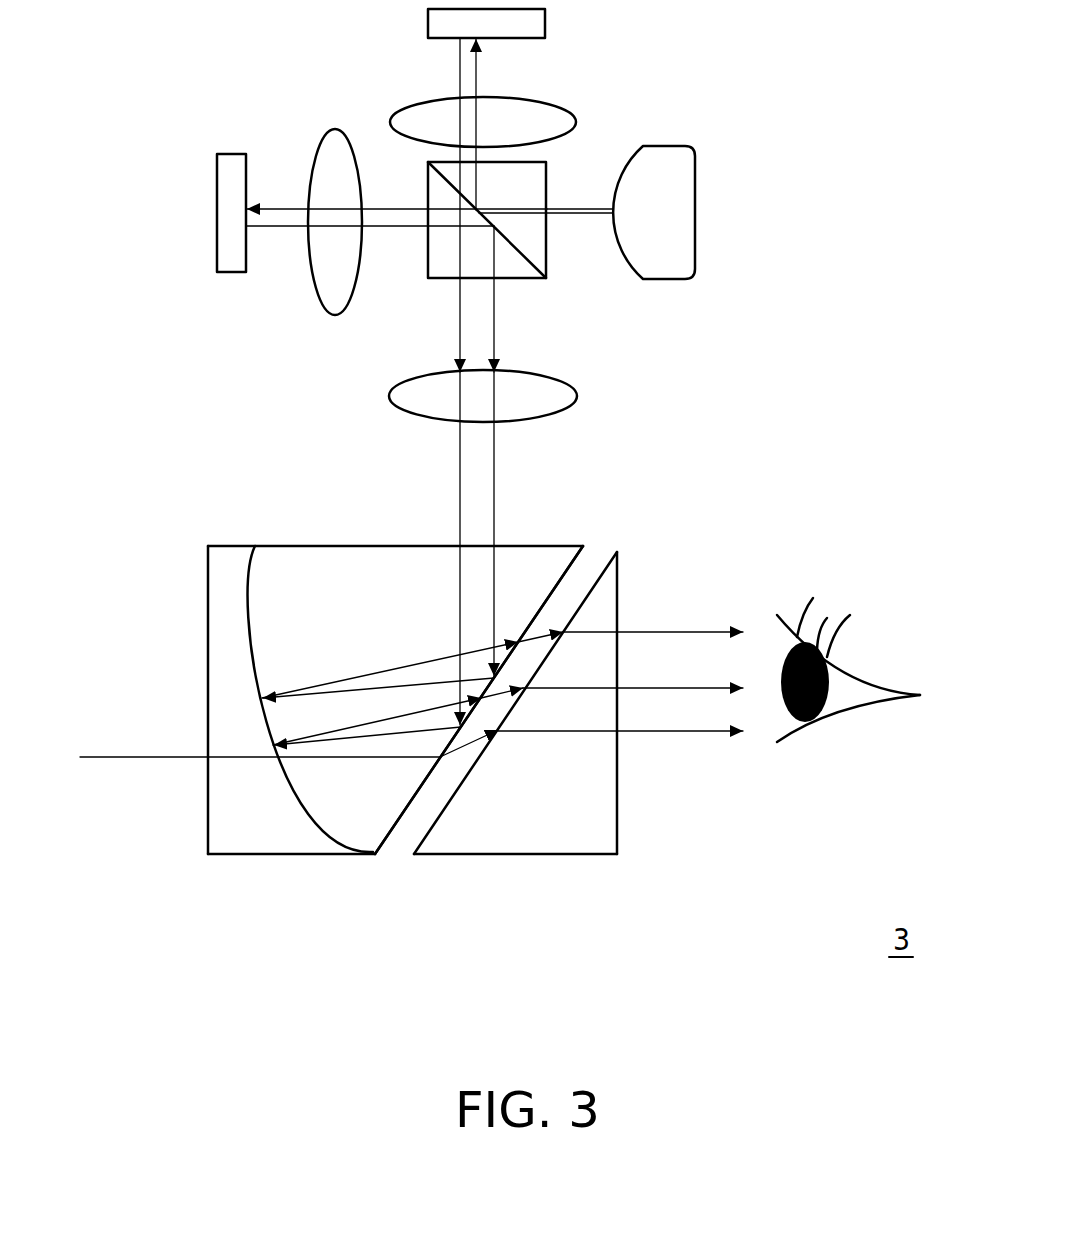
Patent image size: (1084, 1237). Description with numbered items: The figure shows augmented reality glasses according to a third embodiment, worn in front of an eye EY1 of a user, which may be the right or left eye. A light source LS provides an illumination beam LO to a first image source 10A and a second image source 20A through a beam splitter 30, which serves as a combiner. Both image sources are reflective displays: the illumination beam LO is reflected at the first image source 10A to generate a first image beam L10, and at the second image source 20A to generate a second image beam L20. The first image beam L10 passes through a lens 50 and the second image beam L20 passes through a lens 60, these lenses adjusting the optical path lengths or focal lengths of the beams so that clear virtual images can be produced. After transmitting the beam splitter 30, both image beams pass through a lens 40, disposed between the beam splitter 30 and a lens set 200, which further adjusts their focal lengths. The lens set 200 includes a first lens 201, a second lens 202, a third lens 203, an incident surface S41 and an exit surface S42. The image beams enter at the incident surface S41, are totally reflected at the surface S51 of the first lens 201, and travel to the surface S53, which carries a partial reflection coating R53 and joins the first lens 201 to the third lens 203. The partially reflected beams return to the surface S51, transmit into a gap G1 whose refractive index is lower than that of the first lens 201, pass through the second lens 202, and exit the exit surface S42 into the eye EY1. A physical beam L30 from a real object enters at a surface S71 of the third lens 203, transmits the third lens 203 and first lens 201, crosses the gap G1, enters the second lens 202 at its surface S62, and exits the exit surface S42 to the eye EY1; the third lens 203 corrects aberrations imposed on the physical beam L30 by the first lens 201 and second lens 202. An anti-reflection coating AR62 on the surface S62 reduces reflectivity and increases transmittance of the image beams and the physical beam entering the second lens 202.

The first image source 10A is at (428, 17).
The first image beam L10 is at (460, 66).
The lens 50 is at (404, 106).
The second image source 20A is at (233, 154).
The lens 60 is at (316, 155).
The light source LS is at (672, 146).
The illumination beam LO is at (587, 207).
The second image beam L20 is at (275, 228).
The beam splitter 30 is at (445, 279).
The lens 40 is at (404, 380).
The lens set 200 is at (150, 557).
The surface of the first lens S53 is at (286, 703).
The first lens 201 is at (395, 668).
The incident surface S41 is at (358, 545).
The surface of the first lens S51 is at (556, 580).
The gap G1 is at (580, 582).
The surface of the third lens S71 is at (207, 660).
The third lens 203 is at (241, 703).
The physical beam L30 is at (147, 758).
The second lens 202 is at (536, 738).
The exit surface S42 is at (620, 815).
The eye EY1 is at (860, 705).
The partial reflection coating R53 is at (302, 808).
The anti-reflection coating AR62 is at (427, 830).
The surface of the second lens S62 is at (488, 738).